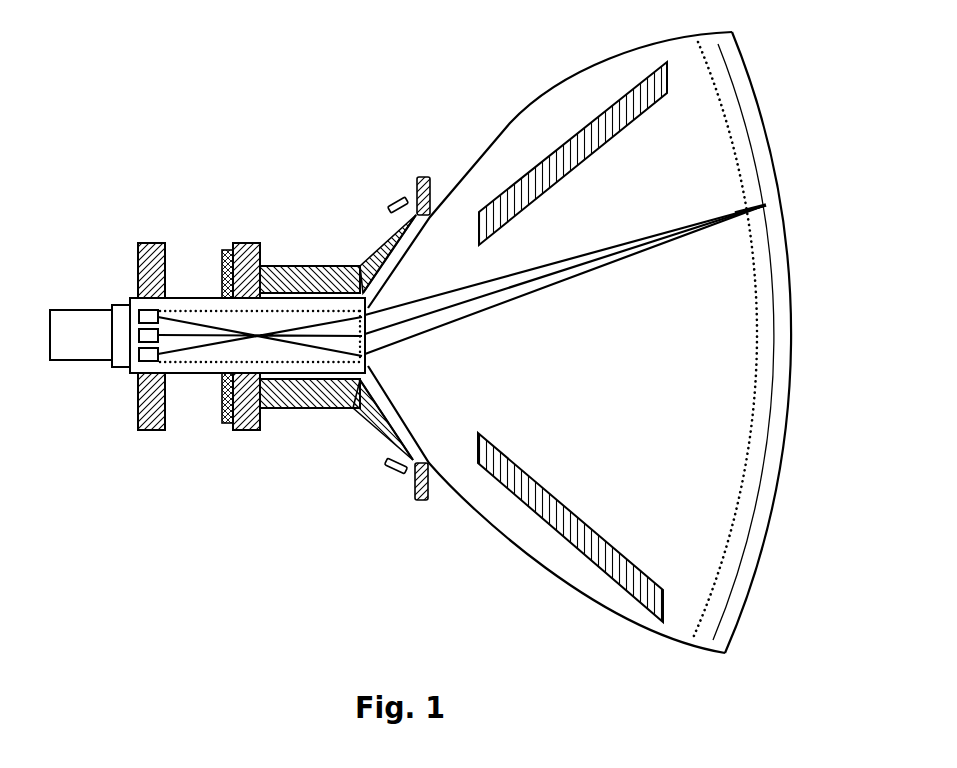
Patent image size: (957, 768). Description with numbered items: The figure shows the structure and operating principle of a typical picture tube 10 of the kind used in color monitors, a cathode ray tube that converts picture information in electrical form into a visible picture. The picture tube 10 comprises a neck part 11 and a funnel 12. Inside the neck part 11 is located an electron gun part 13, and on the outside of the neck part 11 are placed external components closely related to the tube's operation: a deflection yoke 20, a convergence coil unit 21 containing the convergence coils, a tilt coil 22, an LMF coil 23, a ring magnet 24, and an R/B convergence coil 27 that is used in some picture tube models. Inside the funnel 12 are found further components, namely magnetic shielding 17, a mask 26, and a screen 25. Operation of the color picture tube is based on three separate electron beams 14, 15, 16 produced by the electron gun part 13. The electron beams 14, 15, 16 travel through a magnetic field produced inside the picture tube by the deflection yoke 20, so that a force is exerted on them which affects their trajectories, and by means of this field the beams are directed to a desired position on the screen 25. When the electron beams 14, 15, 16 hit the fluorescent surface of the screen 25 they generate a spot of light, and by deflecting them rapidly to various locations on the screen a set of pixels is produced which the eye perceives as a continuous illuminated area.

The picture tube 10 is at (144, 140).
The neck part 11 is at (137, 298).
The funnel 12 is at (628, 45).
The electron gun part 13 is at (207, 309).
The electron beam 14 is at (440, 328).
The electron beam 15 is at (482, 285).
The electron beam 16 is at (475, 303).
The magnetic shielding 17 is at (625, 128).
The deflection yoke 20 is at (350, 266).
The convergence coil unit 21 is at (247, 243).
The tilt coil 22 is at (424, 177).
The LMF coil 23 is at (393, 200).
The ring magnet 24 is at (222, 262).
The screen 25 is at (780, 273).
The mask 26 is at (755, 315).
The R/B convergence coil 27 is at (147, 243).